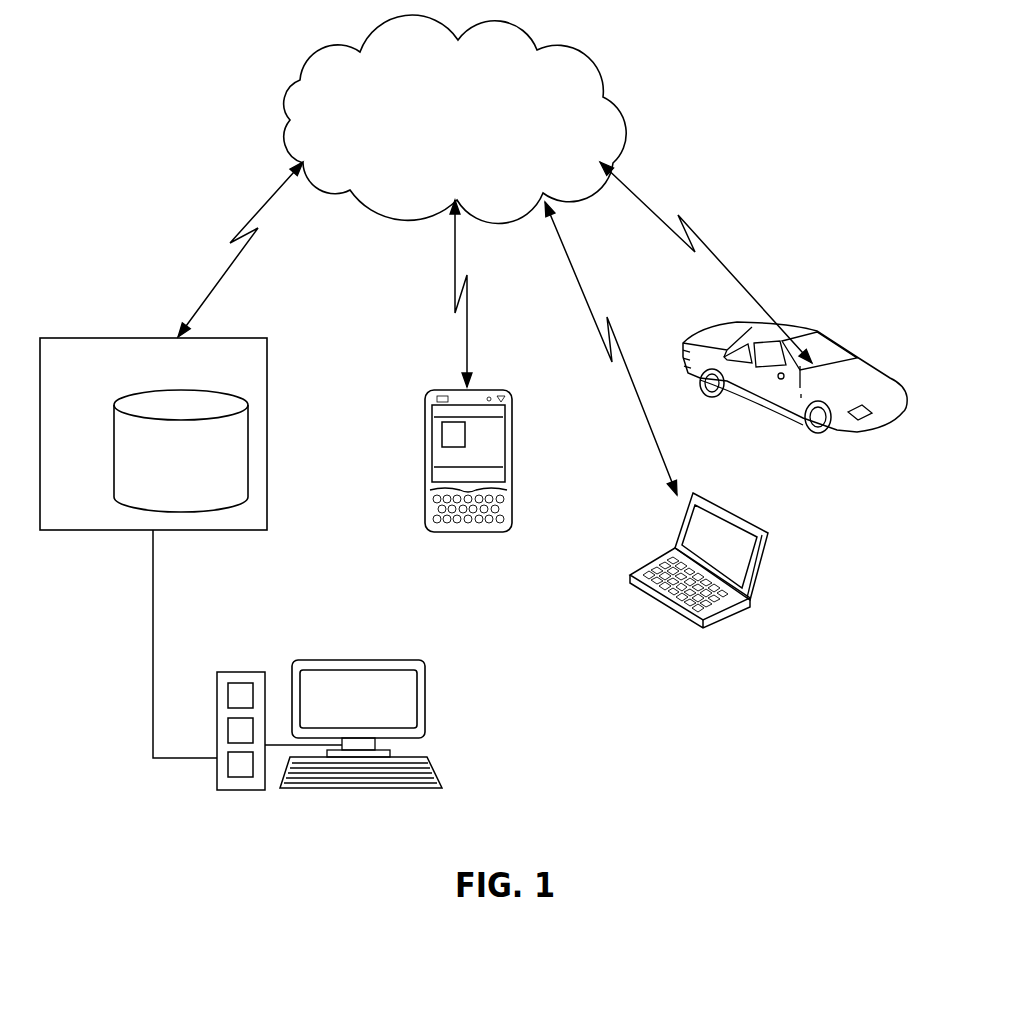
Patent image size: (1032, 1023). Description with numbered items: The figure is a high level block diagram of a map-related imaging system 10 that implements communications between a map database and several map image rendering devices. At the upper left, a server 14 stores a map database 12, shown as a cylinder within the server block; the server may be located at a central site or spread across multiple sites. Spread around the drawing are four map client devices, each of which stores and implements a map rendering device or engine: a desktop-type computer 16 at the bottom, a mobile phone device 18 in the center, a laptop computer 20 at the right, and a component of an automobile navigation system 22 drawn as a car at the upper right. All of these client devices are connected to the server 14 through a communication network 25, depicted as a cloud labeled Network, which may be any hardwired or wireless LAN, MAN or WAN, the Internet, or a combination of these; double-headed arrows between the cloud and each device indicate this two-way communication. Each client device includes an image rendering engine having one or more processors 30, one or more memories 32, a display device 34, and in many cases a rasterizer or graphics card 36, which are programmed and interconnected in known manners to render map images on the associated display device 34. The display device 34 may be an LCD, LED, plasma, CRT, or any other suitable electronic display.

The map-related imaging system 10 is at (213, 140).
The map database 12 is at (250, 445).
The server 14 is at (98, 338).
The map client device 16 is at (437, 697).
The map client device 18 is at (510, 386).
The map client device 20 is at (775, 578).
The map client device 22 is at (897, 433).
The communication network 25 is at (507, 30).
The processor 30 is at (228, 692).
The memory 32 is at (228, 727).
The display device 34 is at (357, 680).
The rasterizer or graphics card 36 is at (228, 771).